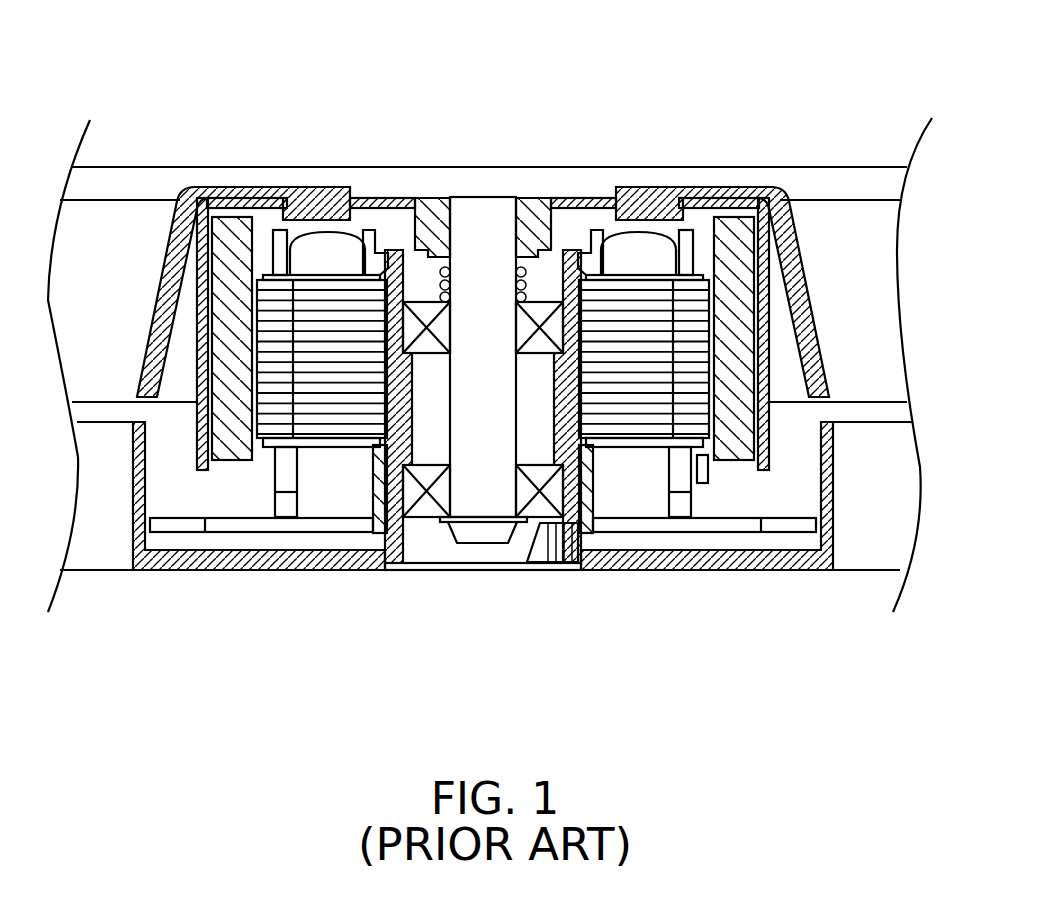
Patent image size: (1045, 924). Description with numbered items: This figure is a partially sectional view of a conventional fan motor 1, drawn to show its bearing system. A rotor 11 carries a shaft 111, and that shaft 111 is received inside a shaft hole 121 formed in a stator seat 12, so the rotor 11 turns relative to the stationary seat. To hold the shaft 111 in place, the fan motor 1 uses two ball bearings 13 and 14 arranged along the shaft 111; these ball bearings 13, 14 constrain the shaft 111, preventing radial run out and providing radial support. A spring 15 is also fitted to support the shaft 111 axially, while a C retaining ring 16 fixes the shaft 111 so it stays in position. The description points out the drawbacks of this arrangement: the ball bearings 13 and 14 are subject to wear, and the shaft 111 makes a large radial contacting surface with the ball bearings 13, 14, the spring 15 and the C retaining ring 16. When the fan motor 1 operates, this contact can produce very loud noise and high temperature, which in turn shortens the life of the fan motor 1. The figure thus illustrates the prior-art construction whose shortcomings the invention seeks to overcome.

The fan motor 1 is at (541, 116).
The rotor 11 is at (791, 165).
The shaft 111 is at (478, 223).
The stator seat 12 is at (483, 459).
The shaft hole 121 is at (425, 427).
The ball bearing 13 is at (537, 297).
The ball bearing 14 is at (535, 520).
The spring 15 is at (403, 262).
The C retaining ring 16 is at (447, 522).